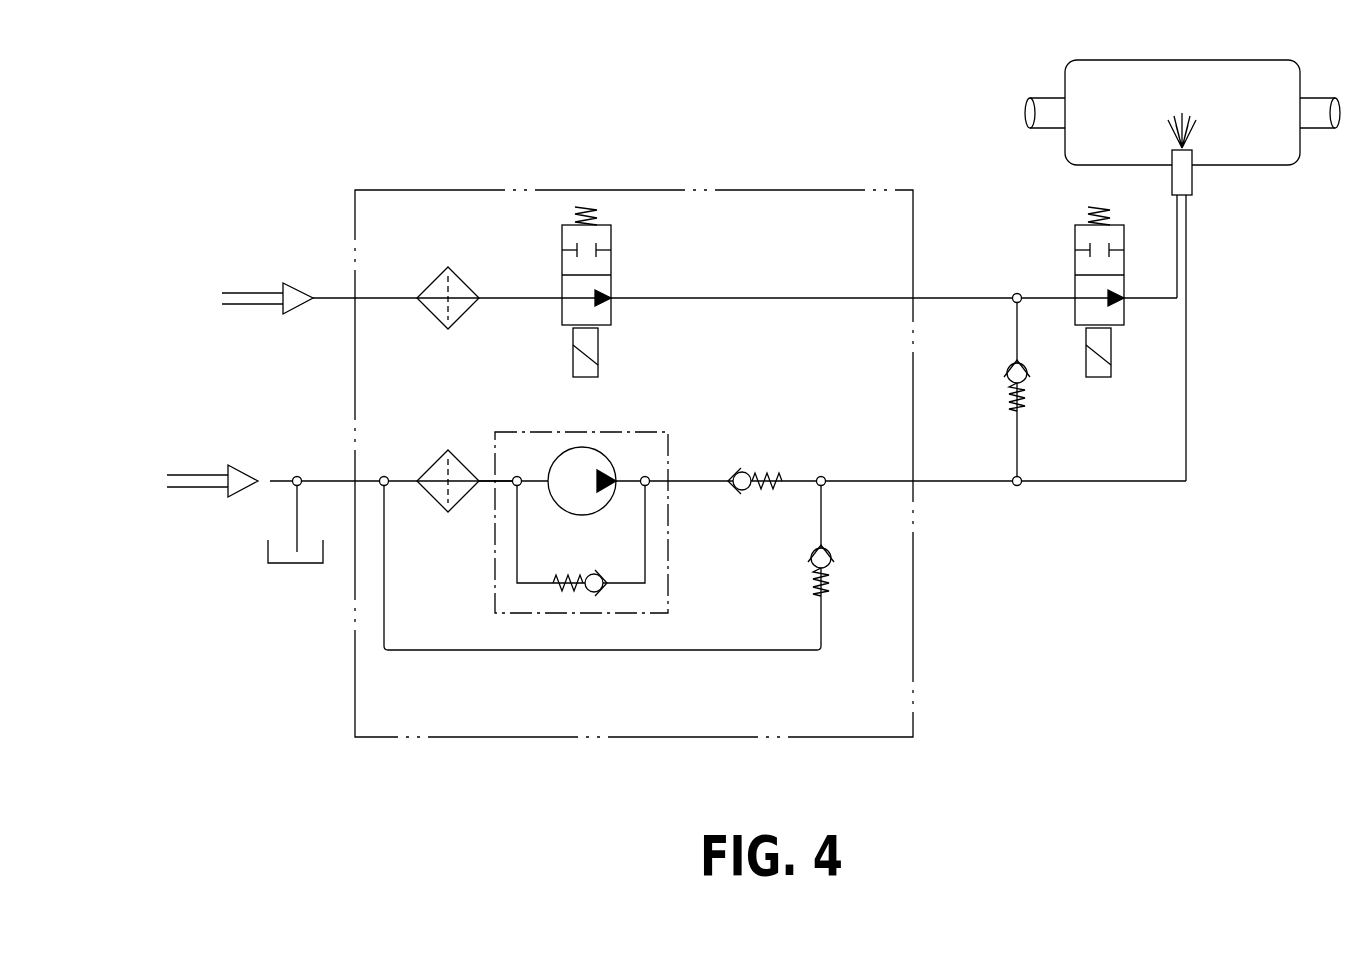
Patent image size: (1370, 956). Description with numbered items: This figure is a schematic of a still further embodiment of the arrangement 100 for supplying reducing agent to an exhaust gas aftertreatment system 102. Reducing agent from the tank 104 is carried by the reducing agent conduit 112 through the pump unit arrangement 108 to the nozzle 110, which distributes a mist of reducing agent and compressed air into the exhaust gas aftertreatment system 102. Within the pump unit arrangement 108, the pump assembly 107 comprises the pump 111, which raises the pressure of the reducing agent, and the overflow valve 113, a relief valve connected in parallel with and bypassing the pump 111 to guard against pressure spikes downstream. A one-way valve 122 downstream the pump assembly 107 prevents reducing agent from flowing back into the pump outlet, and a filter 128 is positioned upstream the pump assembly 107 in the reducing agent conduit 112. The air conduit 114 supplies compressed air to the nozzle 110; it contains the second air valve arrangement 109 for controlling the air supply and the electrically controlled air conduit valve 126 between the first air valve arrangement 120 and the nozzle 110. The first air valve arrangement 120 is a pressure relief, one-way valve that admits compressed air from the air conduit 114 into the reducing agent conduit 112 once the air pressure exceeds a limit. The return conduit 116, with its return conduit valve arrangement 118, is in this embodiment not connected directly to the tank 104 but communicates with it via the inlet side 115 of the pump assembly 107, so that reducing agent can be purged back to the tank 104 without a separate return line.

The arrangement 100 is at (295, 112).
The exhaust gas aftertreatment system 102 is at (1178, 60).
The tank 104 is at (290, 570).
The pump assembly 107 is at (513, 613).
The pump unit arrangement 108 is at (425, 189).
The second air valve arrangement 109 is at (562, 240).
The nozzle 110 is at (1188, 173).
The pump 111 is at (550, 462).
The reducing agent conduit 112 is at (327, 481).
The overflow valve 113 is at (598, 592).
The air conduit 114 is at (762, 298).
The inlet side 115 is at (488, 487).
The return conduit 116 is at (672, 652).
The return conduit valve arrangement 118 is at (832, 548).
The first air valve arrangement 120 is at (1030, 387).
The one-way valve 122 is at (752, 490).
The air conduit valve 126 is at (1128, 312).
The filter 128 is at (410, 470).